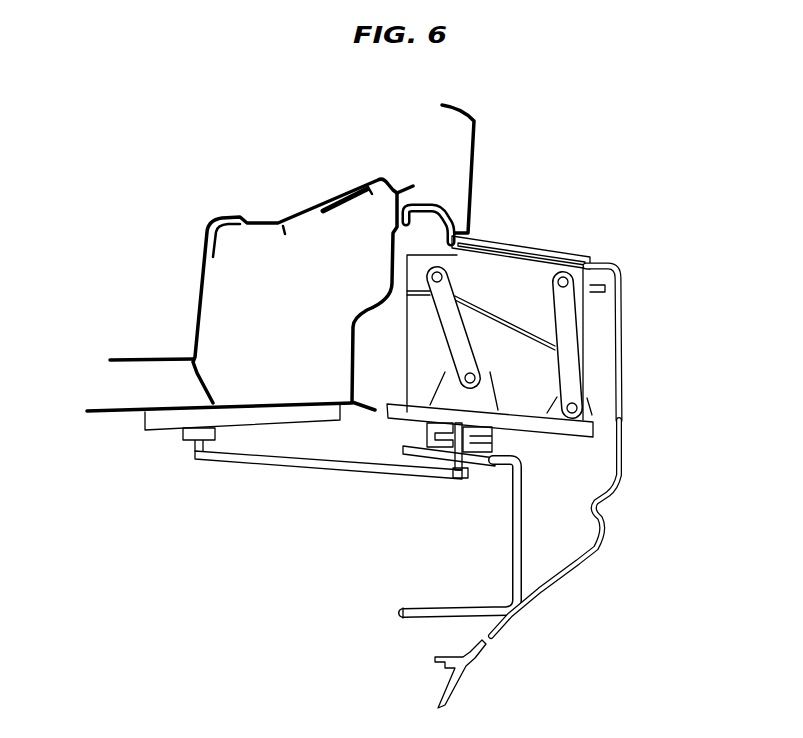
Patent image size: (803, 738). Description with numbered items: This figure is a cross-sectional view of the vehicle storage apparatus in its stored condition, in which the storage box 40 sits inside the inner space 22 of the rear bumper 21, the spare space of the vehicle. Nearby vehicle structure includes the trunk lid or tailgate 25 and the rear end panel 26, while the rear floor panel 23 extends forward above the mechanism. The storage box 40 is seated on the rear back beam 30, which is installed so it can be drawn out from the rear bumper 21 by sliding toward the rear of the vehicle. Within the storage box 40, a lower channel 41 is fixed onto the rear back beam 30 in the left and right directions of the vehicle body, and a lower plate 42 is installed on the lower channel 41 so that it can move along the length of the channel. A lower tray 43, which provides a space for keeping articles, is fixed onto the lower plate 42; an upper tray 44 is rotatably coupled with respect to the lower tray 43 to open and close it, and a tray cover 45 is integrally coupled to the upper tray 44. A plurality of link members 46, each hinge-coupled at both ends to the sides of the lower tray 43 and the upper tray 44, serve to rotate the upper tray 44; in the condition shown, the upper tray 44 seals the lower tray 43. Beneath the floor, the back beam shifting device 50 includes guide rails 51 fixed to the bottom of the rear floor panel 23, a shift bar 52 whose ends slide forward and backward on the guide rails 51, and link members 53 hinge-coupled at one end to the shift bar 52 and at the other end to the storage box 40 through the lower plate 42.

The rear bumper 21 is at (435, 218).
The inner space 22 is at (577, 537).
The rear floor panel 23 is at (102, 408).
The trunk rid or tailgate 25 is at (473, 122).
The rear end panel 26 is at (371, 303).
The rear back beam 30 is at (520, 517).
The storage box 40 is at (588, 362).
The lower channel 41 is at (495, 441).
The lower plate 42 is at (577, 433).
The lower tray 43 is at (520, 377).
The upper tray 44 is at (527, 280).
The tray cover 45 is at (622, 318).
The link member 46 is at (455, 327).
The back beam shifting device 50 is at (181, 451).
The guide rail 51 is at (143, 418).
The shift bar 52 is at (182, 435).
The link member 53 is at (313, 460).